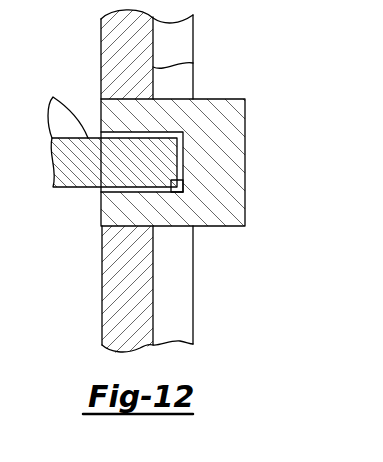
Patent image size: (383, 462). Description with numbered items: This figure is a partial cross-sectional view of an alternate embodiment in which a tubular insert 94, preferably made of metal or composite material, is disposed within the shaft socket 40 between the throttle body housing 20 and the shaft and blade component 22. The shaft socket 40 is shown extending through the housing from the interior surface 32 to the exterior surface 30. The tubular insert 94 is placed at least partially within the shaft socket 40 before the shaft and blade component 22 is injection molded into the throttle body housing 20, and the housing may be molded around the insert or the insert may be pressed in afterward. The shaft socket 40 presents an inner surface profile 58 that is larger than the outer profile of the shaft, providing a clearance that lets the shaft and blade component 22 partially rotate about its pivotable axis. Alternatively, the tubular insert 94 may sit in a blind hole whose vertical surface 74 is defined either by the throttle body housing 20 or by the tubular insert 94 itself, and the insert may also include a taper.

The throttle body housing 20 is at (180, 37).
The shaft and blade component 22 is at (86, 166).
The exterior surface 30 is at (193, 63).
The interior surface 32 is at (101, 50).
The shaft socket 40 is at (112, 227).
The inner surface profile 58 is at (157, 192).
The vertical surface 74 is at (183, 190).
The tubular insert 94 is at (229, 168).